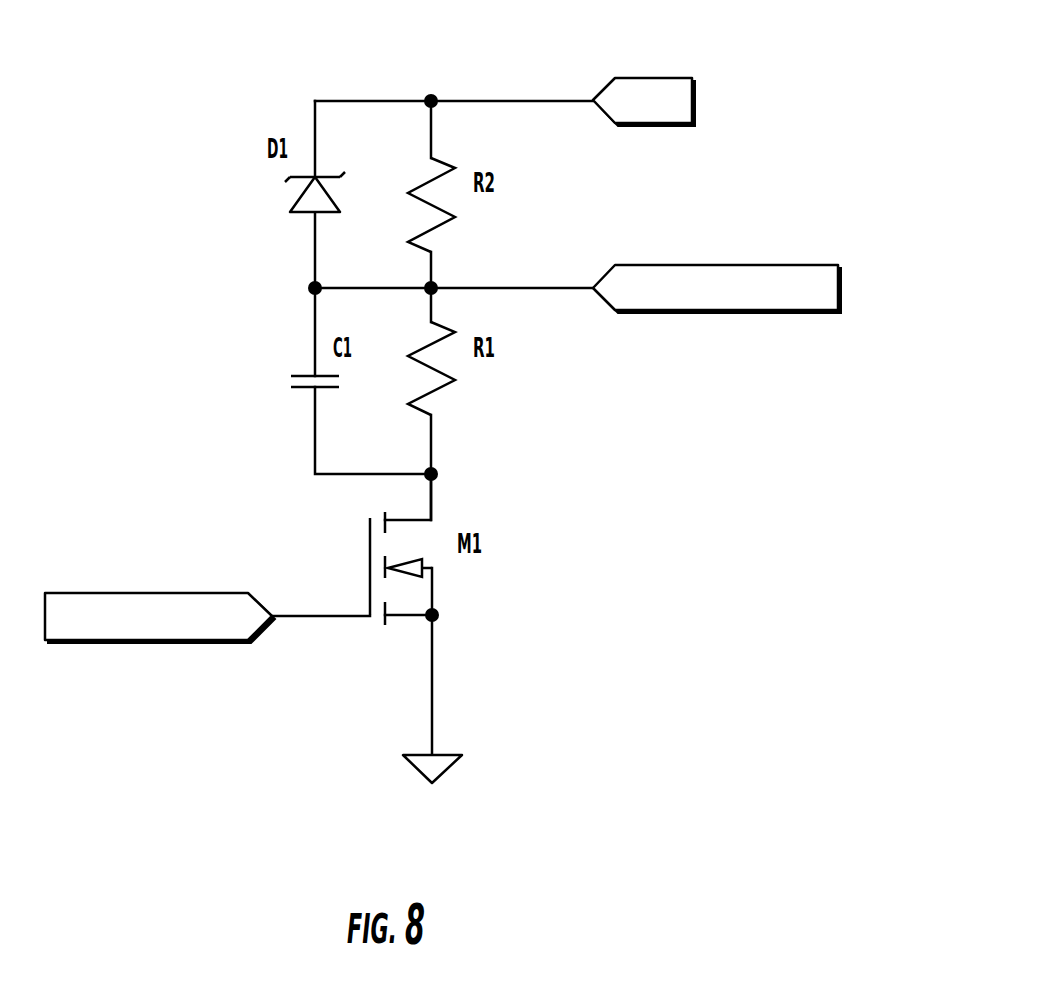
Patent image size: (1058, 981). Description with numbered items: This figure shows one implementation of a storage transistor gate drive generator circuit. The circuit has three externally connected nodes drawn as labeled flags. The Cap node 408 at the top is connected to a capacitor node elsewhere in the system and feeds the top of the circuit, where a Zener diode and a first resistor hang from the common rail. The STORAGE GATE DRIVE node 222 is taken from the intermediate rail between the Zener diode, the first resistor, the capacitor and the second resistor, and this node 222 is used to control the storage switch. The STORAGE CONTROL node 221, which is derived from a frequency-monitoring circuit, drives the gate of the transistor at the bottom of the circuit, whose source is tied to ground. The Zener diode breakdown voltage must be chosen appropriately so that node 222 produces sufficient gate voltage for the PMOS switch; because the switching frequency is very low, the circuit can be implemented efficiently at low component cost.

The Cap node 408 is at (642, 78).
The STORAGE GATE DRIVE node 222 is at (650, 265).
The STORAGE CONTROL node 221 is at (115, 593).